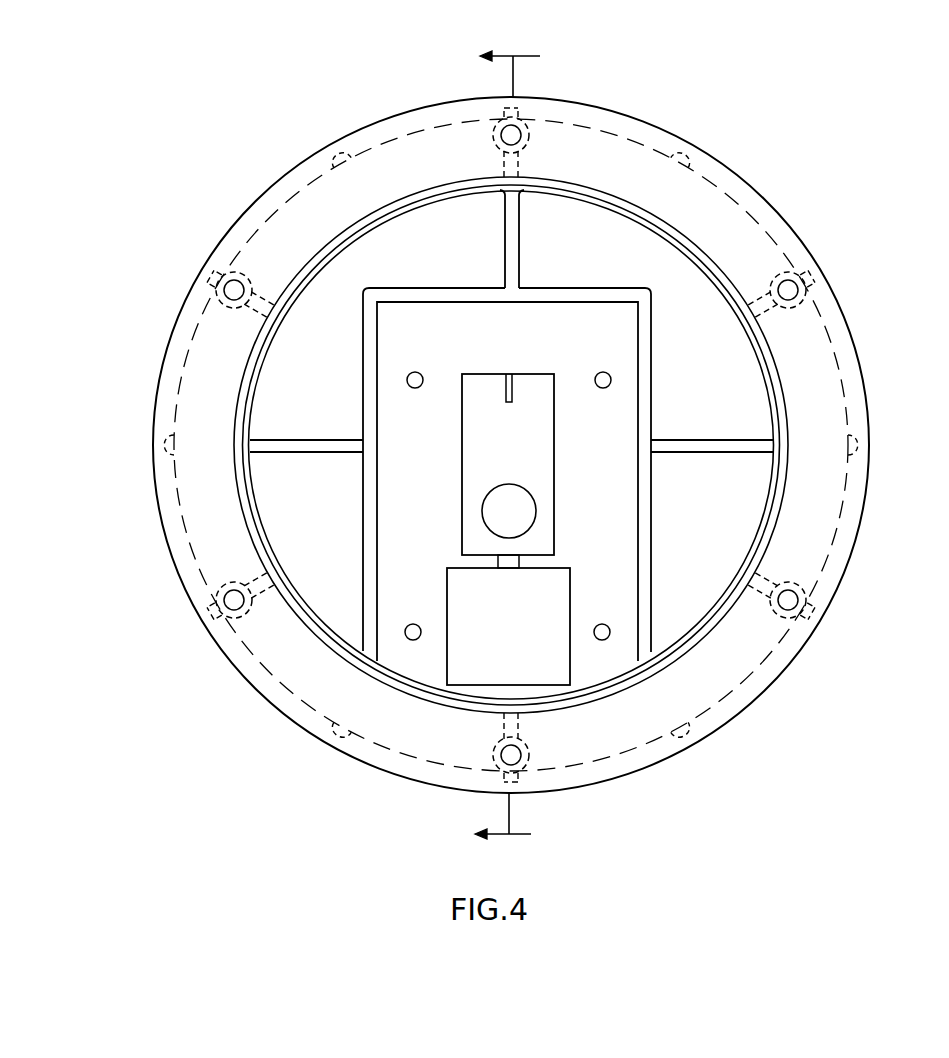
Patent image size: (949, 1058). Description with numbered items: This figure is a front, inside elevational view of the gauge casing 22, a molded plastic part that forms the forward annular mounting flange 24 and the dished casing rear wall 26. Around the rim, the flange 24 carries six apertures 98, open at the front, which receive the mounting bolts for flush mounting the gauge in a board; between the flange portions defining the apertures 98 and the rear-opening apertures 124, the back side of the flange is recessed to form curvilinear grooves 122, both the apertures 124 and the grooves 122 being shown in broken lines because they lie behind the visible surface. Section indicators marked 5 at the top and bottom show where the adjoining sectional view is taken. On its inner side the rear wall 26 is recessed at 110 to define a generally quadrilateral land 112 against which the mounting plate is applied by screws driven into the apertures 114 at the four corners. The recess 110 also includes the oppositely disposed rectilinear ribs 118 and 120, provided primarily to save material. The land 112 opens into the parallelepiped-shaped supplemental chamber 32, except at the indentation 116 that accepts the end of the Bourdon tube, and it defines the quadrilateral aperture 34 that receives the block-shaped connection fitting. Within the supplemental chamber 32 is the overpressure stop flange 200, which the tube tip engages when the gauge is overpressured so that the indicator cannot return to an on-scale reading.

The section line 5- 5 is at (515, 448).
The casing 22 is at (782, 203).
The forward annular mounting flange 24 is at (707, 177).
The casing rear wall 26 is at (703, 298).
The supplemental chamber 32 is at (481, 456).
The aperture 34 is at (462, 663).
The apertures 98 is at (517, 131).
The recess 110 is at (568, 316).
The land 112 is at (449, 297).
The apertures 114 is at (422, 377).
The indentation 116 is at (510, 562).
The rectilinear rib 118 is at (312, 428).
The rectilinear rib 120 is at (706, 458).
The curvilinear grooves 122 is at (348, 150).
The apertures 124 is at (212, 293).
The overpressure stop flange 200 is at (512, 392).